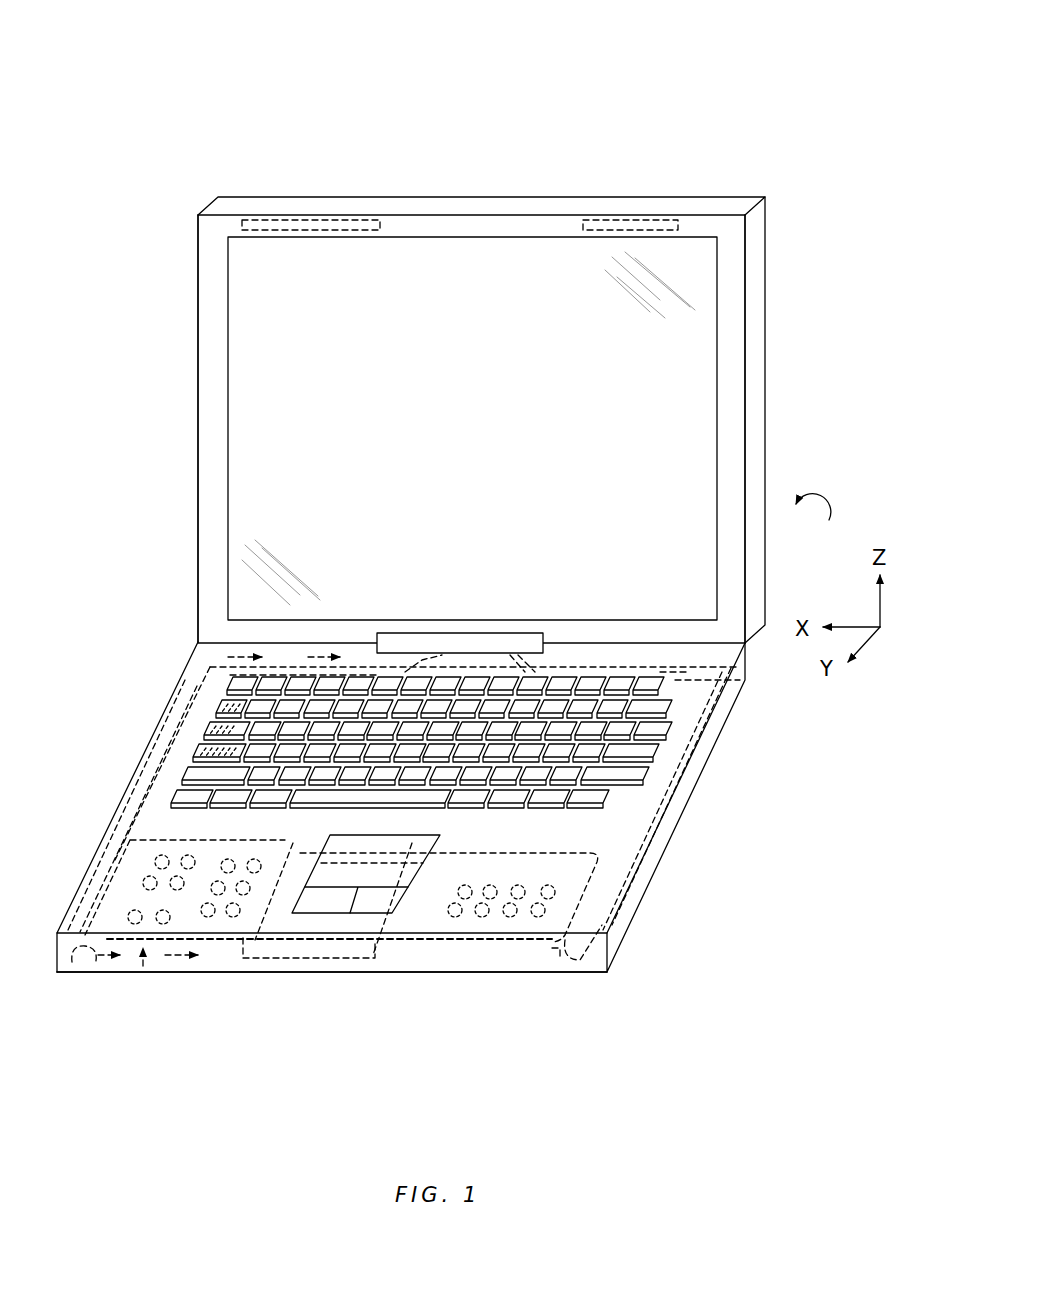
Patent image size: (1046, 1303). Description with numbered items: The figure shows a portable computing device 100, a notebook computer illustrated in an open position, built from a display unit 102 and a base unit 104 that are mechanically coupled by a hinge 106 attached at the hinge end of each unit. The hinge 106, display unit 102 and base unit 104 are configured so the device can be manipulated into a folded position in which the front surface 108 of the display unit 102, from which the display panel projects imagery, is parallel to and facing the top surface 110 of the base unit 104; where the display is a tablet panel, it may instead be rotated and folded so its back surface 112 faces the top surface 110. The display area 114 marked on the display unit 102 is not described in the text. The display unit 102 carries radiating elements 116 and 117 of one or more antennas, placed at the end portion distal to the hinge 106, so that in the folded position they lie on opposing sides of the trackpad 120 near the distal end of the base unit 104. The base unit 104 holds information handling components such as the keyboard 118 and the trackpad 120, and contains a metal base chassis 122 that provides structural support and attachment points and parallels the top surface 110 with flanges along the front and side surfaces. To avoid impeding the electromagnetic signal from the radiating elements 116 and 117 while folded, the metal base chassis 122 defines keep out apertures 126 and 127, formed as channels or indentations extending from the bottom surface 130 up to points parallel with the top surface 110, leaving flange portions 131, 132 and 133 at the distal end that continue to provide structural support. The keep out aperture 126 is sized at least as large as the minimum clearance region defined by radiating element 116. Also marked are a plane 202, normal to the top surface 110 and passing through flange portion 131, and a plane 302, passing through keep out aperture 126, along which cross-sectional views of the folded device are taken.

The portable computing device 100 is at (782, 42).
The display unit 102 is at (752, 357).
The base unit 104 is at (720, 745).
The hinge 106 is at (545, 640).
The front surface 108 is at (733, 322).
The top surface 110 is at (557, 848).
The back surface 112 is at (808, 529).
The display screen 114 is at (684, 556).
The radiating element 116 is at (307, 222).
The radiating element 117 is at (607, 222).
The keyboard 118 is at (653, 723).
The trackpad 120 is at (440, 852).
The metal base chassis 122 is at (672, 817).
The keep out aperture 126 is at (143, 966).
The keep out aperture 127 is at (438, 953).
The bottom surface 130 is at (503, 982).
The flange portion 131 is at (73, 967).
The flange portion 132 is at (333, 950).
The flange portion 133 is at (573, 953).
The plane 202 is at (103, 958).
The plane 302 is at (178, 958).